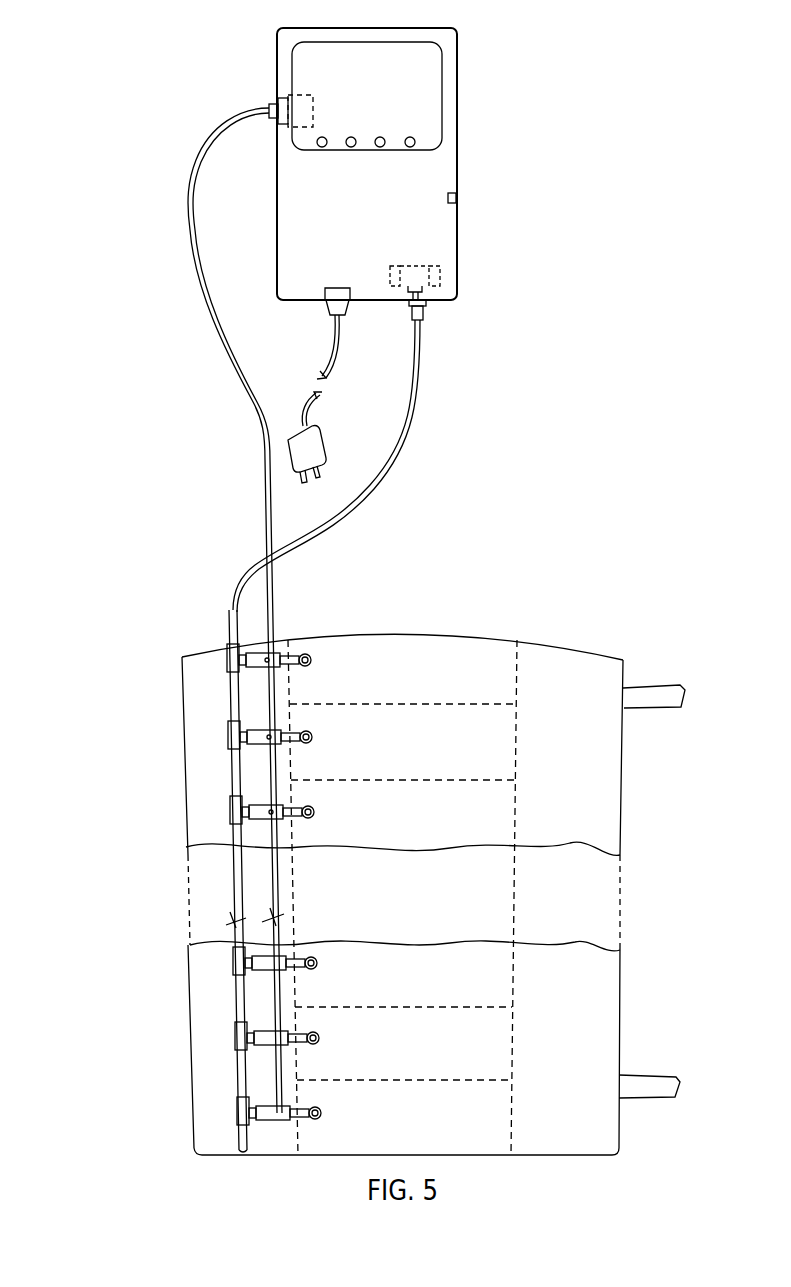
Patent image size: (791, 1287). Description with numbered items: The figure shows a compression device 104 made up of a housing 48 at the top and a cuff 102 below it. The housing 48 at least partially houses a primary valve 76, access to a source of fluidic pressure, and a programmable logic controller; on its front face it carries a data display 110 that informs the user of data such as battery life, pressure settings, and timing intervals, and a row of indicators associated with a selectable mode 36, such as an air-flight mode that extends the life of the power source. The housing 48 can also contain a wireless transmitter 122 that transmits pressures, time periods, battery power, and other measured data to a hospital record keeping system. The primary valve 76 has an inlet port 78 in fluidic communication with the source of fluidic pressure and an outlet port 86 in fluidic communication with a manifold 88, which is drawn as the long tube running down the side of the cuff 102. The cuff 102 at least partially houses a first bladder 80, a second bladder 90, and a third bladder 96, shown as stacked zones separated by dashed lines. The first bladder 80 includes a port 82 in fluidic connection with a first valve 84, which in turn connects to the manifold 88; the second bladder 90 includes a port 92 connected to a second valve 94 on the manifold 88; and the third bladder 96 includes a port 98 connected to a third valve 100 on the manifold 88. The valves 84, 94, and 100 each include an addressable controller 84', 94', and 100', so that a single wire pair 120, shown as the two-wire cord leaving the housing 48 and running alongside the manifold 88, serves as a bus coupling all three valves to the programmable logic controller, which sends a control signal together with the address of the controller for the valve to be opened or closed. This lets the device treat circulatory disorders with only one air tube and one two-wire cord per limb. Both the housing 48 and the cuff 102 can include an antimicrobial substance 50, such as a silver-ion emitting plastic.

The compression device 104 is at (128, 230).
The housing 48 is at (277, 264).
The antimicrobial substance 50 is at (277, 170).
The data display 110 is at (300, 77).
The mode 36 is at (414, 142).
The wireless transmitter 122 is at (288, 98).
The inlet port 78 is at (424, 299).
The primary valve 76 is at (430, 316).
The outlet port 86 is at (420, 334).
The wire pair 120 is at (250, 408).
The cuff 102 is at (580, 645).
The first bladder 80 is at (431, 686).
The second bladder 90 is at (431, 760).
The third bladder 96 is at (431, 837).
The manifold 88 is at (232, 692).
The first valve 84 is at (235, 646).
The port 82 is at (311, 657).
The addressable controller 84' is at (297, 680).
The second valve 94 is at (238, 723).
The port 92 is at (312, 735).
The addressable controller 94' is at (302, 757).
The third valve 100 is at (238, 798).
The port 98 is at (314, 810).
The addressable controller 100' is at (306, 833).